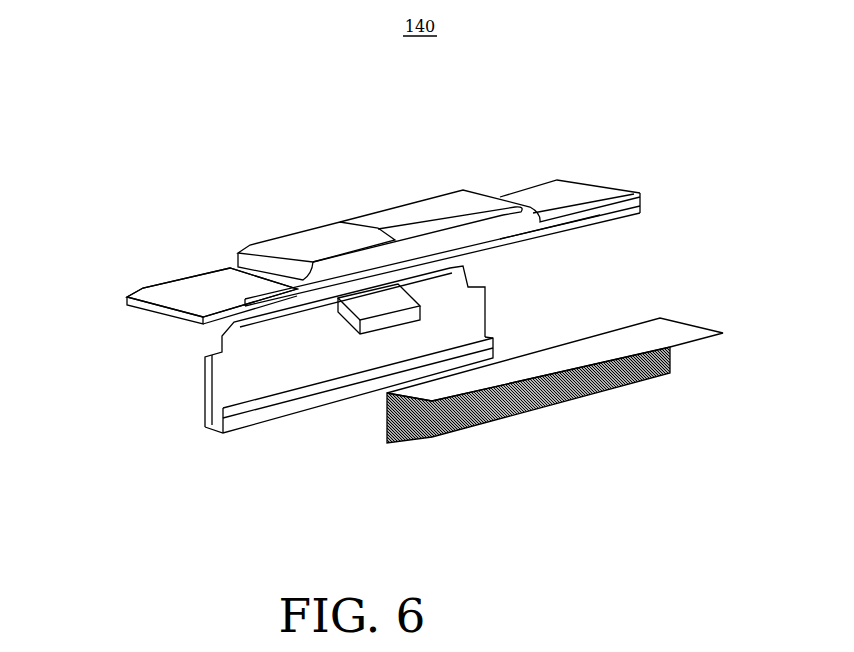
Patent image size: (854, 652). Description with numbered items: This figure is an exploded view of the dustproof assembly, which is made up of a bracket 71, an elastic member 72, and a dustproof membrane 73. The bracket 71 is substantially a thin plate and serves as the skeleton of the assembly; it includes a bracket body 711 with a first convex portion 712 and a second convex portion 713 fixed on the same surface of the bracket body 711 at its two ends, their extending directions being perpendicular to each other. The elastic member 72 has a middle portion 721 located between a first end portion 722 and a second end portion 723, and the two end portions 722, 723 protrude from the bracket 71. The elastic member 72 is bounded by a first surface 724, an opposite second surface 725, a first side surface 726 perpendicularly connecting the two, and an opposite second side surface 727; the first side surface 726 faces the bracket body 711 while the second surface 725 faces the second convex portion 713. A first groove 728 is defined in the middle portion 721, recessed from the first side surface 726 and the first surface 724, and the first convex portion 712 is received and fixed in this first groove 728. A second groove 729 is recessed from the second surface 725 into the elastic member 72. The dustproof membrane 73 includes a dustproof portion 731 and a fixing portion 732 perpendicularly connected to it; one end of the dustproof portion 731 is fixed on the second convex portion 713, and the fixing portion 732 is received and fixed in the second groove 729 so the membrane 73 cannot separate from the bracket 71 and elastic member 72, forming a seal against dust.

The bracket 71 is at (298, 369).
The bracket body 711 is at (275, 370).
The first convex portion 712 is at (377, 318).
The second convex portion 713 is at (213, 417).
The elastic member 72 is at (406, 223).
The middle portion 721 is at (432, 200).
The first end portion 722 is at (212, 278).
The second end portion 723 is at (579, 200).
The first surface 724 is at (300, 225).
The second surface 725 is at (643, 207).
The first side surface 726 is at (132, 283).
The second side surface 727 is at (603, 216).
The first groove 728 is at (360, 209).
The second groove 729 is at (555, 241).
The dustproof membrane 73 is at (555, 412).
The dustproof portion 731 is at (432, 413).
The fixing portion 732 is at (618, 352).